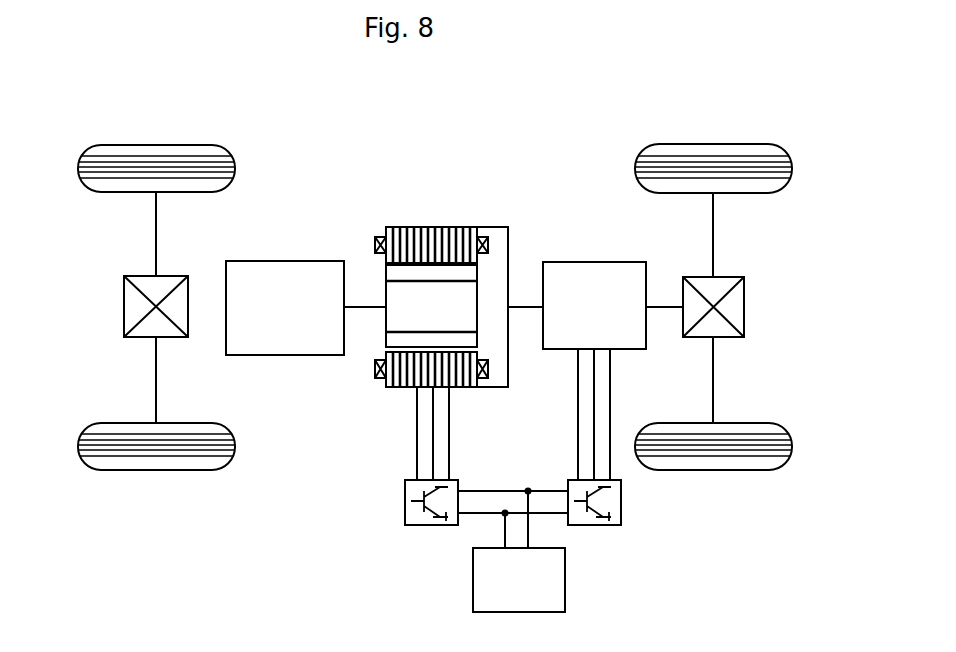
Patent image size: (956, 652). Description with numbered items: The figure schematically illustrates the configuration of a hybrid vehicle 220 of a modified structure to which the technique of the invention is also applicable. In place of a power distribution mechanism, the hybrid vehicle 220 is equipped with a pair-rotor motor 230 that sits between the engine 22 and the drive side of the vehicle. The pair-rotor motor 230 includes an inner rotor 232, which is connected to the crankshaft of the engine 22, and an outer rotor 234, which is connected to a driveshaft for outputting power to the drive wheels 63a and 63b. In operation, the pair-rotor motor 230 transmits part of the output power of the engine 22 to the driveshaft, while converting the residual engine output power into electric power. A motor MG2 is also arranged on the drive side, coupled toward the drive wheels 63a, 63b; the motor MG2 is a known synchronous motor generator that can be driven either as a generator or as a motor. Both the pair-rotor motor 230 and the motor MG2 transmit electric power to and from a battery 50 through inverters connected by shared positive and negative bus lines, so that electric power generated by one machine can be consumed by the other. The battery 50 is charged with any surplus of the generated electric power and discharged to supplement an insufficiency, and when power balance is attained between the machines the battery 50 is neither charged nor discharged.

The hybrid vehicle 220 is at (537, 152).
The pair-rotor motor 230 is at (373, 157).
The inner rotor 232 is at (386, 290).
The outer rotor 234 is at (433, 227).
The engine 22 is at (285, 355).
The motor MG2 is at (593, 262).
The drive wheel 63a is at (713, 144).
The drive wheel 63b is at (713, 470).
The battery 50 is at (565, 575).